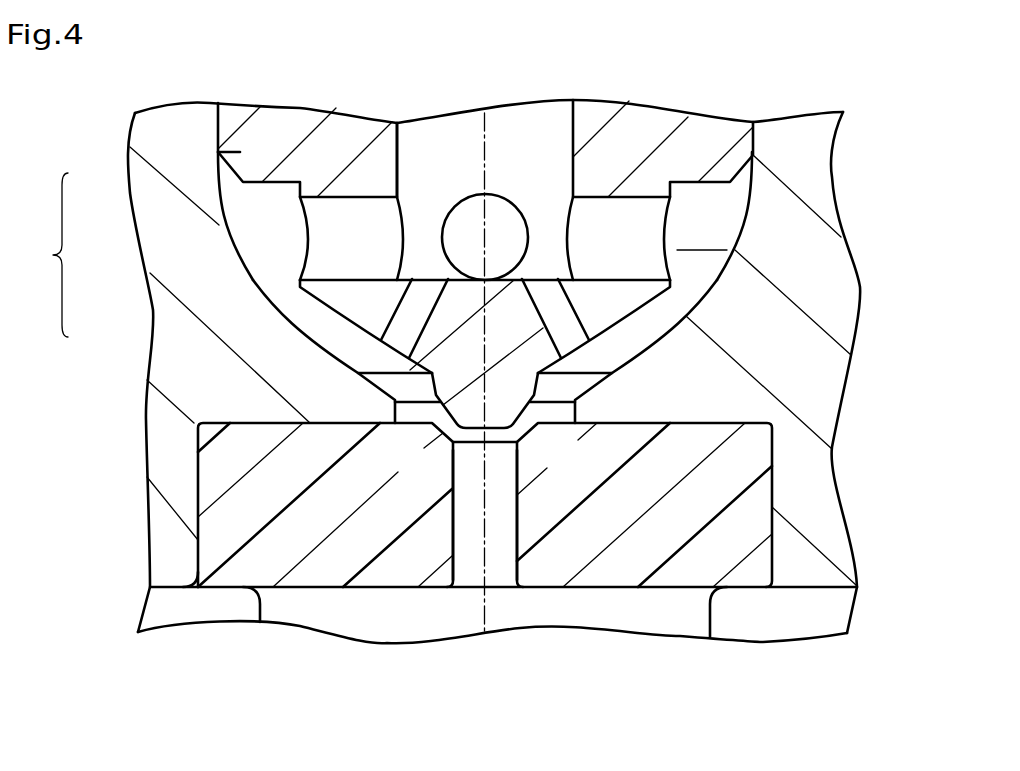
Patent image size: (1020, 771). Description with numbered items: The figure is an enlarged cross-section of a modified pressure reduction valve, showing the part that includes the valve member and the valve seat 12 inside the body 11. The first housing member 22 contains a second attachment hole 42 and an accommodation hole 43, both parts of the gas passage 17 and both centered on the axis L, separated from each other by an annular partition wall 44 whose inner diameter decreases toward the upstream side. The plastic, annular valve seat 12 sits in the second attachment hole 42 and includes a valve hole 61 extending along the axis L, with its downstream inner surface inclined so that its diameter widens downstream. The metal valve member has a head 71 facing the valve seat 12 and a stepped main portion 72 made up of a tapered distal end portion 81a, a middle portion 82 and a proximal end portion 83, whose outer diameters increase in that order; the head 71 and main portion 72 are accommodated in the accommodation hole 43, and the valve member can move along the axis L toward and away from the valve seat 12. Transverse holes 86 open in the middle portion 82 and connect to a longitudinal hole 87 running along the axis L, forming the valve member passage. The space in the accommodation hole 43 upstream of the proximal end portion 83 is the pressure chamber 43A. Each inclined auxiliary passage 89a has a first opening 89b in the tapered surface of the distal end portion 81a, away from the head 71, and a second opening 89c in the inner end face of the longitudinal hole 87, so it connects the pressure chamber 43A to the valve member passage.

The body 11 is at (525, 366).
The valve seat 12 is at (300, 588).
The gas passage 17 is at (506, 389).
The first housing member 22 is at (847, 507).
The second attachment hole 42 is at (767, 560).
The accommodation hole 43 is at (733, 189).
The pressure chamber 43A is at (702, 238).
The partition wall 44 is at (283, 363).
The valve hole 61 is at (518, 560).
The head 71 is at (447, 438).
The main portion 72 is at (387, 287).
The distal end portion 81a is at (377, 318).
The middle portion 82 is at (320, 238).
The proximal end portion 83 is at (240, 153).
The transverse hole 86 is at (466, 210).
The longitudinal hole 87 is at (397, 143).
The auxiliary passage 89a is at (420, 333).
The first opening 89b is at (385, 352).
The second opening 89c is at (425, 280).
The axis L is at (483, 143).